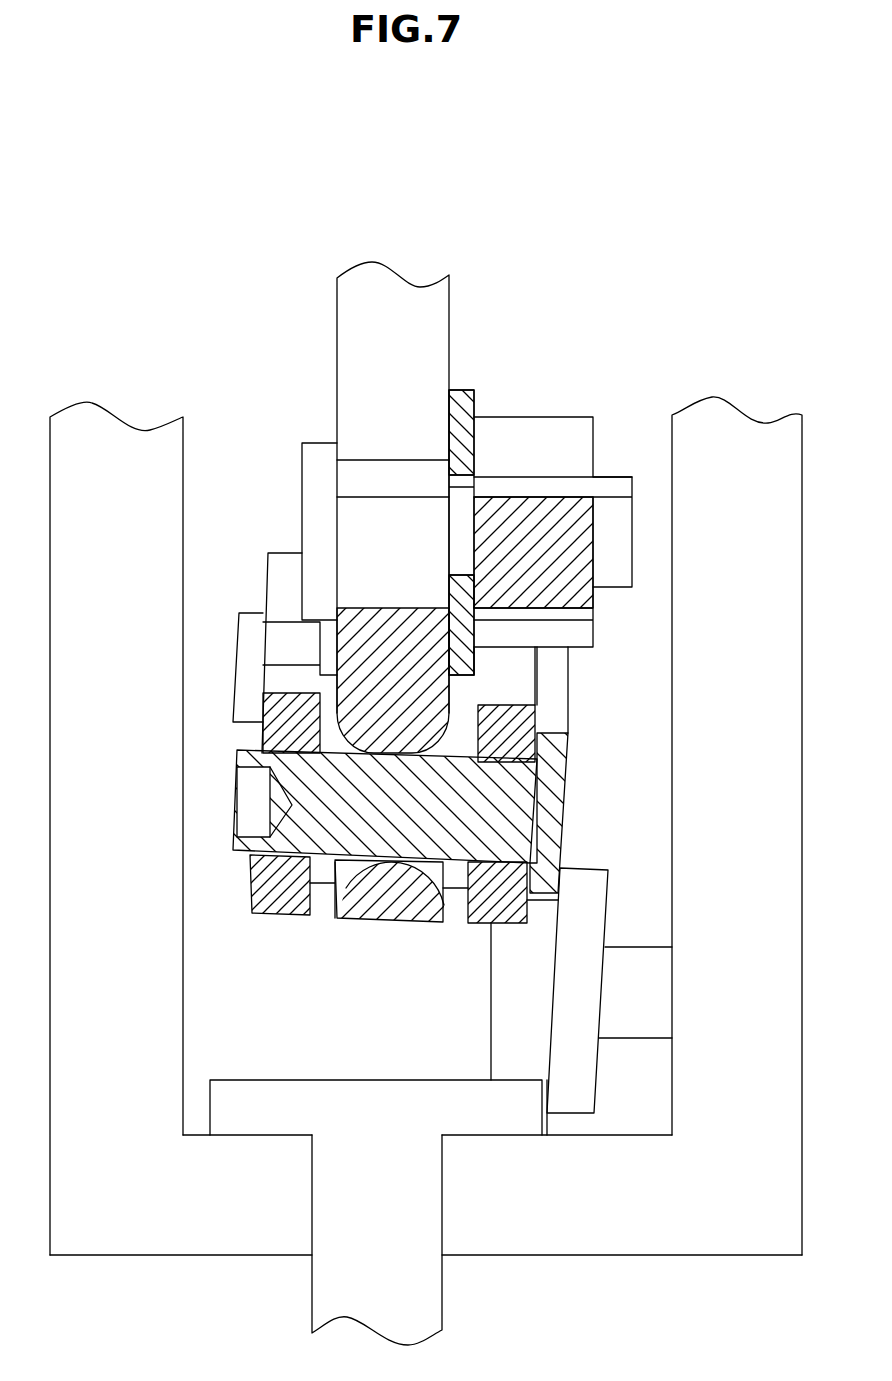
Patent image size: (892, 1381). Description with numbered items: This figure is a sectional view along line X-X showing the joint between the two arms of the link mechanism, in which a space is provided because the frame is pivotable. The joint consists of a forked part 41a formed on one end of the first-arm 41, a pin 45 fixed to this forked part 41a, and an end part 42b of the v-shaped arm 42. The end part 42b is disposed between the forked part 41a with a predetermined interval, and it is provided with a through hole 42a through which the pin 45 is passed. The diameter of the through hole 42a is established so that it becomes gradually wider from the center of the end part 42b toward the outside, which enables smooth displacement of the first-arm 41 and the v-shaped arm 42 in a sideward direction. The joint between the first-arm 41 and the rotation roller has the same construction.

The first-arm 41 is at (530, 730).
The forked part 41a is at (482, 915).
The v-shaped arm 42 is at (407, 617).
The through hole 42a is at (318, 752).
The end part 42b is at (382, 896).
The pin 45 is at (530, 848).